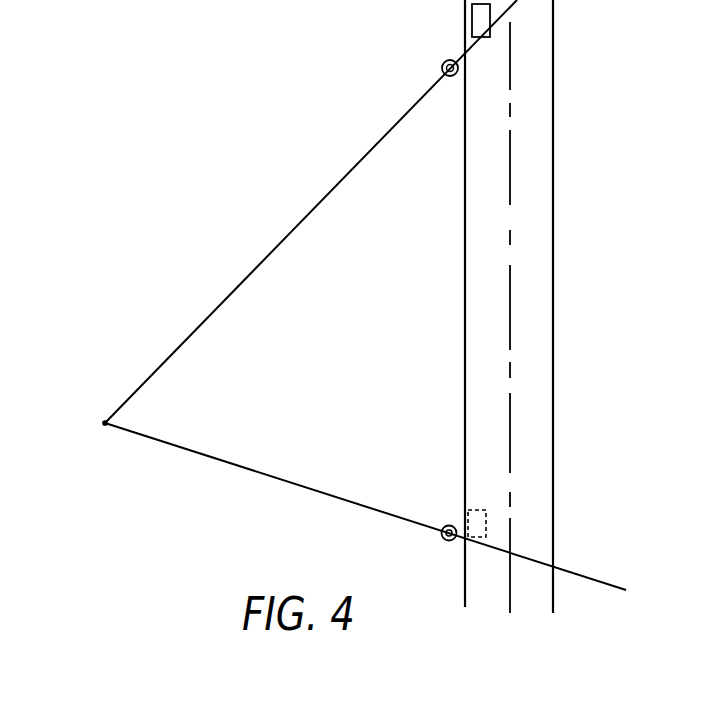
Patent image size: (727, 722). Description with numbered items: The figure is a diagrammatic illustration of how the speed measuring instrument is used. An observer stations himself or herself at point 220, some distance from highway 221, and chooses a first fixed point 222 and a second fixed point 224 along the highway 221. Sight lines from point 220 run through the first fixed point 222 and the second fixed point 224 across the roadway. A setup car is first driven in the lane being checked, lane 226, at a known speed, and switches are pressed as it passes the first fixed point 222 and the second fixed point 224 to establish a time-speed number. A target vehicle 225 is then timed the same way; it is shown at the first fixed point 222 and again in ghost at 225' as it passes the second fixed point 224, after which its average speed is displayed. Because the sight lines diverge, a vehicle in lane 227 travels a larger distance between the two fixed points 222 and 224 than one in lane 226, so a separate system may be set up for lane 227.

The observer point 220 is at (94, 416).
The highway 221 is at (463, 248).
The first fixed point 222 is at (443, 64).
The second fixed point 224 is at (446, 540).
The target vehicle 225 is at (445, 20).
The target vehicle in ghost position 225' is at (443, 505).
The lane 226 is at (480, 173).
The lane 227 is at (540, 93).